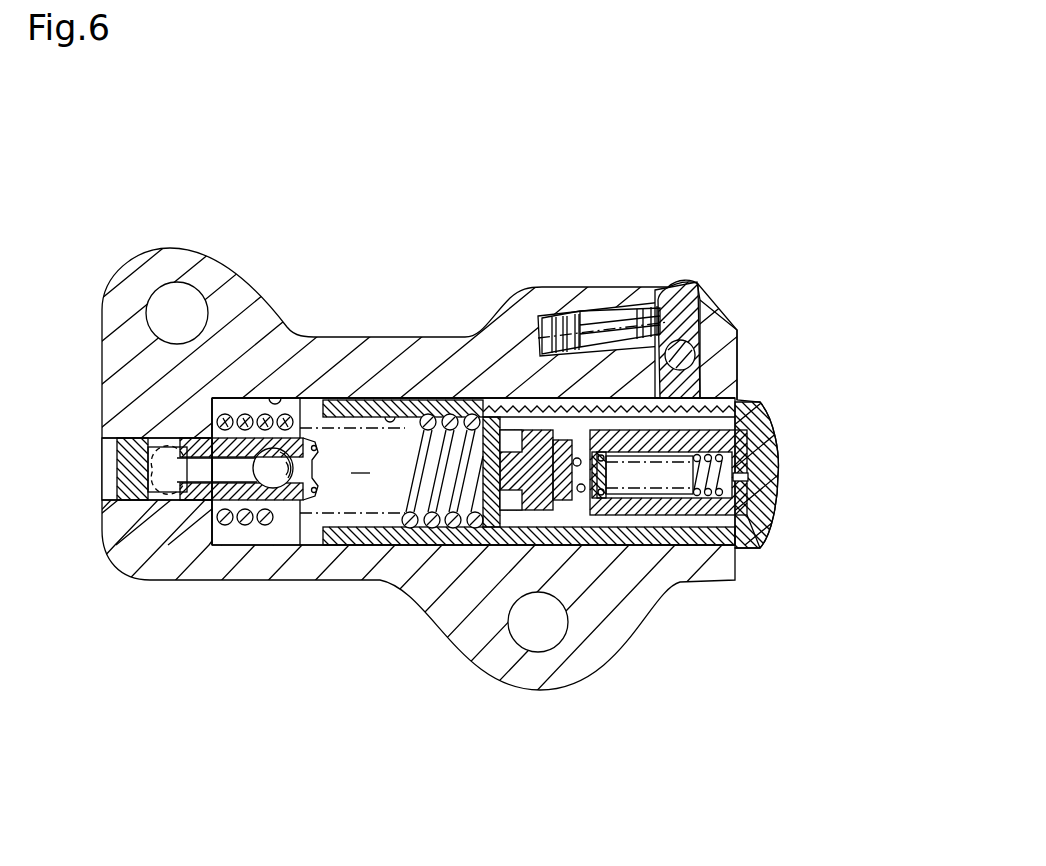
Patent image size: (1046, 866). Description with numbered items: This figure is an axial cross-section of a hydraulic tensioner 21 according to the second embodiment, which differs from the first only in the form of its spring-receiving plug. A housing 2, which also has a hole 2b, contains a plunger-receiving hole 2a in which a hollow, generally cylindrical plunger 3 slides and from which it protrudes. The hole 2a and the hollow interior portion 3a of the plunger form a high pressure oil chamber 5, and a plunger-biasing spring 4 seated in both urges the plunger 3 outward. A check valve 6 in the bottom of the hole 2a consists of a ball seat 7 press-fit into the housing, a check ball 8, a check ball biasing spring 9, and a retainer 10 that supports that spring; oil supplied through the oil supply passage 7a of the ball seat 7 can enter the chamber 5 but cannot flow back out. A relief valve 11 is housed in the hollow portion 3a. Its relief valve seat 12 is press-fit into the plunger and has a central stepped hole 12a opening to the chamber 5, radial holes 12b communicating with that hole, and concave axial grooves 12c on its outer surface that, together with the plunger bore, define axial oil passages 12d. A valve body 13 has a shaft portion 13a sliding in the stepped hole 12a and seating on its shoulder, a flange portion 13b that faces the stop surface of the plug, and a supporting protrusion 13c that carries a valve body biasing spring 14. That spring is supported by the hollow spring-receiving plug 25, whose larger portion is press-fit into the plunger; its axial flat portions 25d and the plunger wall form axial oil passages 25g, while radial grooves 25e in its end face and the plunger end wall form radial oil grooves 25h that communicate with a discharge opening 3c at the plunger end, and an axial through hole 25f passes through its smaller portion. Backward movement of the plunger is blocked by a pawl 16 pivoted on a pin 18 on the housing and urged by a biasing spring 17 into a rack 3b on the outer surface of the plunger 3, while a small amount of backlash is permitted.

The hydraulic tensioner 21 is at (455, 188).
The housing 2 is at (213, 265).
The plunger-receiving hole 2a is at (285, 398).
The mounting hole 2b is at (150, 313).
The plunger 3 is at (343, 400).
The hollow interior portion 3a is at (385, 416).
The rack 3b is at (600, 345).
The discharge opening 3c is at (748, 478).
The plunger-biasing spring 4 is at (241, 400).
The high pressure oil chamber 5 is at (352, 470).
The check valve 6 is at (178, 536).
The ball seat 7 is at (190, 500).
The oil supply passage 7a is at (200, 446).
The check ball 8 is at (215, 500).
The check ball biasing spring 9 is at (268, 500).
The ball seat 10 is at (249, 538).
The relief valve 11 is at (469, 526).
The relief valve seat 12 is at (497, 506).
The stepped hole 12a is at (445, 420).
The radial holes 12b is at (525, 365).
The axial grooves 12c is at (545, 356).
The axial oil passages 12d is at (545, 438).
The valve body 13 is at (542, 611).
The shaft portion 13a is at (515, 500).
The flange portion 13b is at (573, 470).
The supporting protrusion 13c is at (600, 485).
The valve body biasing spring 14 is at (606, 462).
The pawl 16 is at (735, 374).
The biasing spring 17 is at (650, 320).
The pin 18 is at (733, 345).
The hollow spring-receiving plug 25 is at (744, 606).
The axial flat portions 25d is at (730, 565).
The radial grooves 25e is at (823, 548).
The axial through hole 25f is at (763, 500).
The axial oil passages 25g is at (690, 545).
The radial oil grooves 25h is at (757, 540).